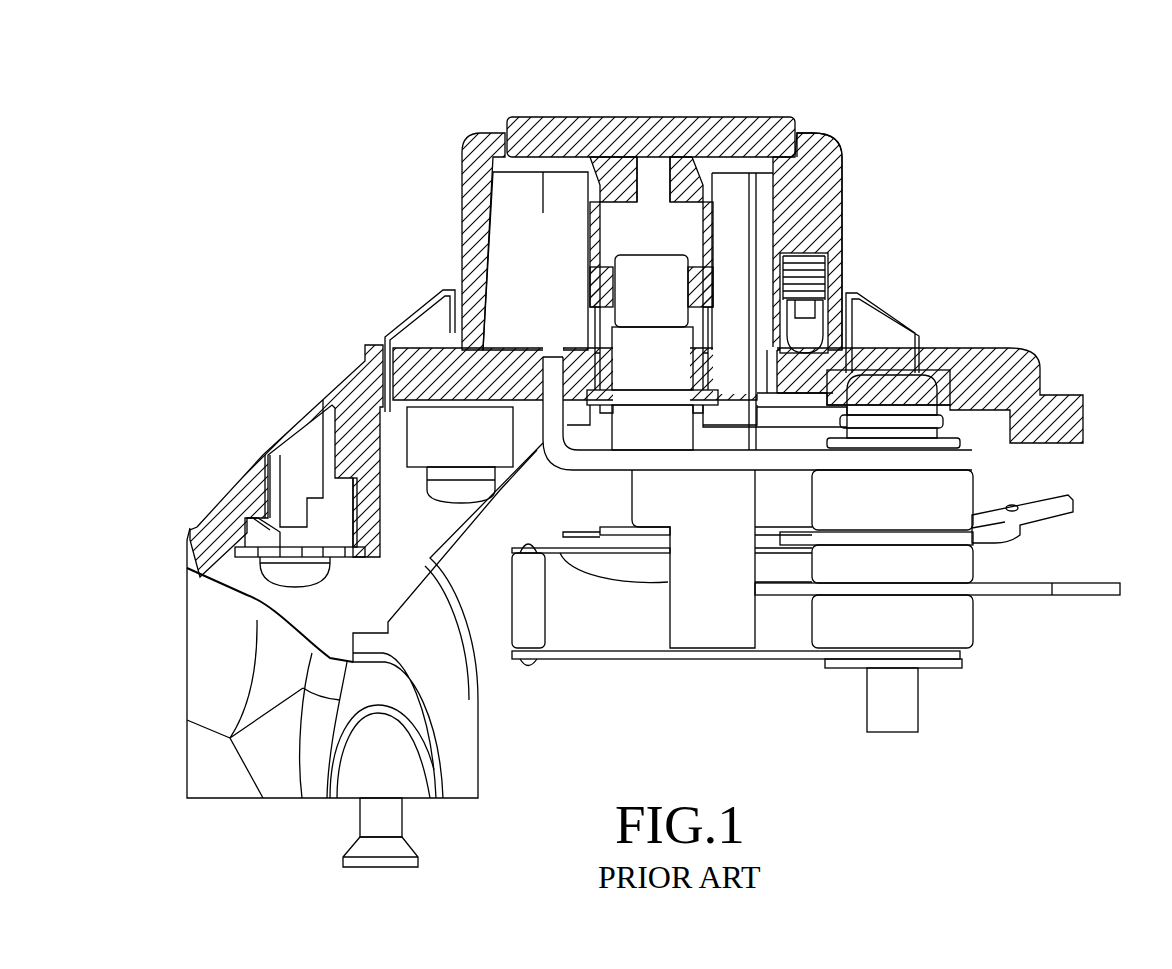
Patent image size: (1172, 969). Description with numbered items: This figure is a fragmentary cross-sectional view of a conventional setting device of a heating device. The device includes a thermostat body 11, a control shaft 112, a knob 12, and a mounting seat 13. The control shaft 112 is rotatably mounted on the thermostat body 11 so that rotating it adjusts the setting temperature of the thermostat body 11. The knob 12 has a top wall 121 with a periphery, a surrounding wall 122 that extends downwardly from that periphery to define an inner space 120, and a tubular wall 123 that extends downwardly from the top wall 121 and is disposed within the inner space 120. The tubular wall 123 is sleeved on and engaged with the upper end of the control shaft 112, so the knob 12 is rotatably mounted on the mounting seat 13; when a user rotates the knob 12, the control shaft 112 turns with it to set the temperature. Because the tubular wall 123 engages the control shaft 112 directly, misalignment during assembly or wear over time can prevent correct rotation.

The thermostat body 11 is at (762, 670).
The knob 12 is at (842, 183).
The control shaft 112 is at (828, 232).
The inner space 120 is at (823, 193).
The top wall 121 is at (543, 168).
The surrounding wall 122 is at (482, 200).
The tubular wall 123 is at (602, 285).
The mounting seat 13 is at (962, 352).